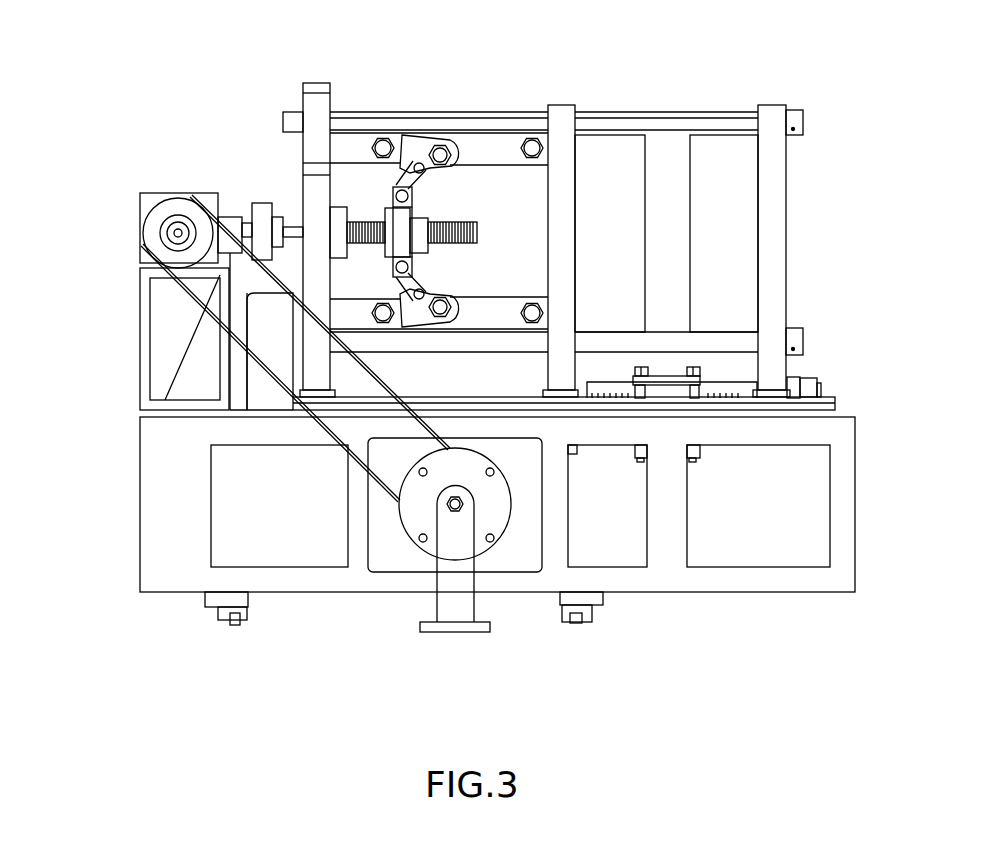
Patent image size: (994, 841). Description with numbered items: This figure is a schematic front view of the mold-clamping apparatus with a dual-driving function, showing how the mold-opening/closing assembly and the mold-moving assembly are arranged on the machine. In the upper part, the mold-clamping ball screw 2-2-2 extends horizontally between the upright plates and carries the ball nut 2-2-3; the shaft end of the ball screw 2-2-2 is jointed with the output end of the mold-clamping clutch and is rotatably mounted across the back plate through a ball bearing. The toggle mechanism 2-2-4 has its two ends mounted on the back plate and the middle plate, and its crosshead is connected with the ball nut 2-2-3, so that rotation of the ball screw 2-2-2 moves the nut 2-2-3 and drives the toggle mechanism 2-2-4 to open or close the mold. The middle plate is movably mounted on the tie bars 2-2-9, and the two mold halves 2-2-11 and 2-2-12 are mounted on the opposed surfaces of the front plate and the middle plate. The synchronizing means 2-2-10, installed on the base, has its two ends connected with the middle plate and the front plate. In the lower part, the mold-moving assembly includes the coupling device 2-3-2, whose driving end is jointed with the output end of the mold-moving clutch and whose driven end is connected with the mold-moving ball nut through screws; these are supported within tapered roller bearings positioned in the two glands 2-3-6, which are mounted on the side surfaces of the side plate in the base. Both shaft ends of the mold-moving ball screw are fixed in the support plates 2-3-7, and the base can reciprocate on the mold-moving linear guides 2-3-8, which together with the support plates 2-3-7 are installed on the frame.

The mold-clamping ball screw 2-2-2 is at (485, 207).
The ball nut 2-2-3 is at (420, 230).
The toggle mechanism 2-2-4 is at (417, 147).
The tie bars 2-2-9 is at (722, 343).
The synchronizing means 2-2-10 is at (667, 380).
The mold half 2-2-11 is at (622, 195).
The mold half 2-2-12 is at (723, 195).
The coupling device 2-3-2 is at (283, 395).
The glands 2-3-6 is at (425, 505).
The support plates 2-3-7 is at (452, 592).
The mold-moving linear guides 2-3-8 is at (233, 623).